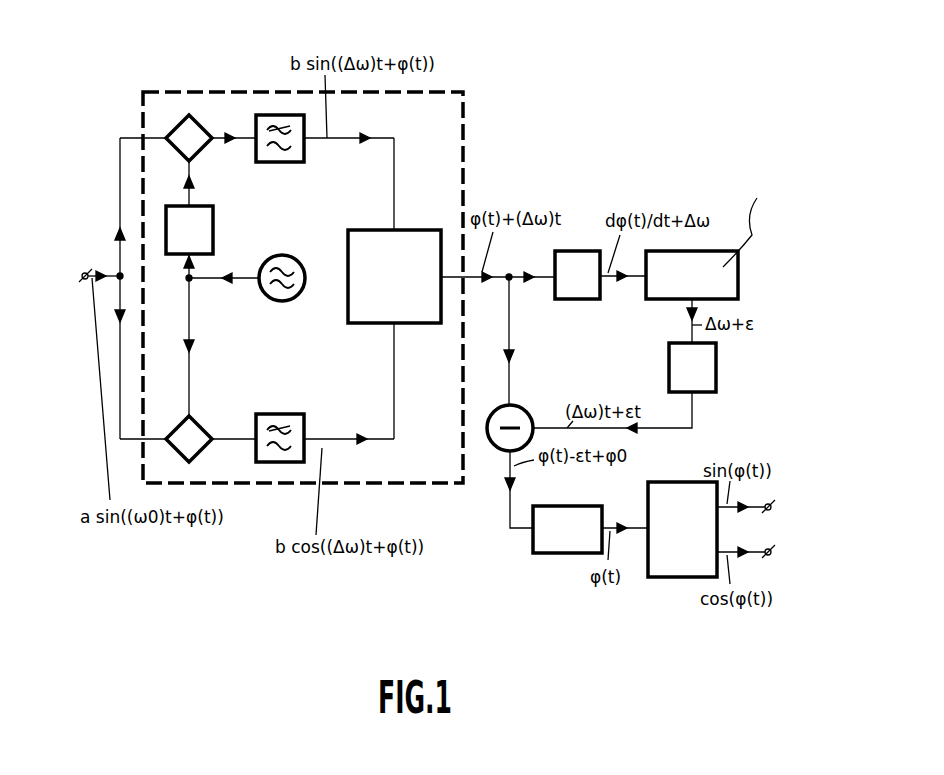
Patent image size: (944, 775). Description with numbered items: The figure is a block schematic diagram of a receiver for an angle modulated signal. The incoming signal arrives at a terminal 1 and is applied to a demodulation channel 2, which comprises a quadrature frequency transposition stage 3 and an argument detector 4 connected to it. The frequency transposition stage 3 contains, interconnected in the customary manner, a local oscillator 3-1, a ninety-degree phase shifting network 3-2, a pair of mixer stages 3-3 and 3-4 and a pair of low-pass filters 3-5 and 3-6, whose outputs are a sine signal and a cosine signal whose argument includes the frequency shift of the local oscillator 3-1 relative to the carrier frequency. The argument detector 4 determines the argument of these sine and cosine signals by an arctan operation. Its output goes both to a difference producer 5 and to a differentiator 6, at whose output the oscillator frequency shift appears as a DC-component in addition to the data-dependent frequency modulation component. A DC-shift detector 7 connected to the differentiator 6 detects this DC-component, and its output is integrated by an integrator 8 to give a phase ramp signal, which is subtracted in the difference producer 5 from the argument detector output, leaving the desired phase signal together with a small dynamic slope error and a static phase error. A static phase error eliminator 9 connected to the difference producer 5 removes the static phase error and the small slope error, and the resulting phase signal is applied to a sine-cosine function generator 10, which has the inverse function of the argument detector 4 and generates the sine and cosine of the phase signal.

The terminal 1 is at (82, 275).
The demodulation channel 2 is at (177, 92).
The quadrature frequency transposition stage 3 is at (290, 218).
The local oscillator 3-1 is at (293, 257).
The 90° phase shifting network 3-2 is at (213, 216).
The mixer stage 3-3 is at (204, 150).
The mixer stage 3-4 is at (204, 427).
The low-pass filter 3-5 is at (304, 150).
The low-pass filter 3-6 is at (274, 414).
The argument detector 4 is at (392, 229).
The difference producer 5 is at (516, 411).
The differentiator 6 is at (590, 300).
The DC-shift detector 7 is at (738, 283).
The integrator 8 is at (669, 357).
The static phase error eliminator 9 is at (548, 555).
The sine-cosine function generator 10 is at (663, 578).